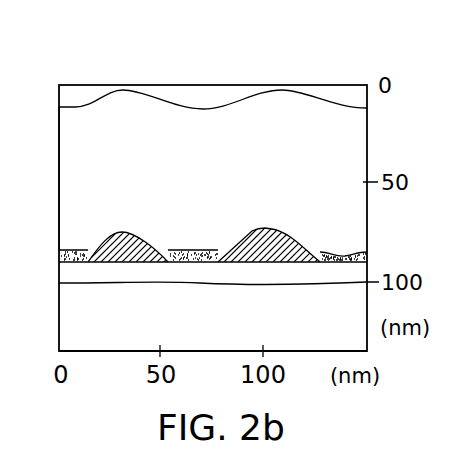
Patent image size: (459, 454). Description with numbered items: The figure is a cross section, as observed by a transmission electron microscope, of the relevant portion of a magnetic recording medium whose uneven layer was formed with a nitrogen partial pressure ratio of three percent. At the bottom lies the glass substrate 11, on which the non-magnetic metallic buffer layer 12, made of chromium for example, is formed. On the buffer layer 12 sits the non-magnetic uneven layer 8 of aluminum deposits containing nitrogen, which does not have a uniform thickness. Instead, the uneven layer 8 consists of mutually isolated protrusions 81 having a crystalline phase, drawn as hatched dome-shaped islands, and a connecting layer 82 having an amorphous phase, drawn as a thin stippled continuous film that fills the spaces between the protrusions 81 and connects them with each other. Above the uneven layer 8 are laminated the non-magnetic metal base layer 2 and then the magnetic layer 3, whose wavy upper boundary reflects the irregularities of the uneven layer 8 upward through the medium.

The magnetic layer 3 is at (330, 92).
The non-magnetic metal base layer 2 is at (72, 157).
The non-magnetic uneven layer 8 is at (213, 204).
The mutually isolated protrusions 81 is at (143, 231).
The connecting layer 82 is at (213, 224).
The non-magnetic metallic buffer layer 12 is at (68, 276).
The glass substrate 11 is at (68, 326).